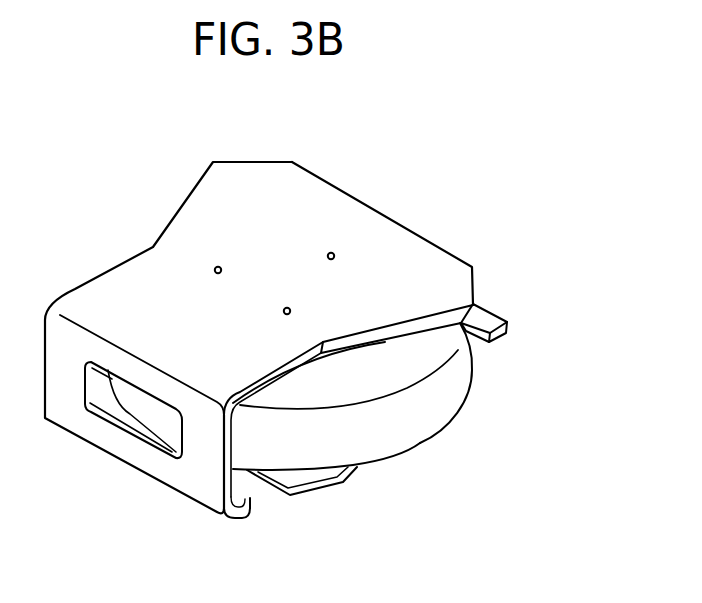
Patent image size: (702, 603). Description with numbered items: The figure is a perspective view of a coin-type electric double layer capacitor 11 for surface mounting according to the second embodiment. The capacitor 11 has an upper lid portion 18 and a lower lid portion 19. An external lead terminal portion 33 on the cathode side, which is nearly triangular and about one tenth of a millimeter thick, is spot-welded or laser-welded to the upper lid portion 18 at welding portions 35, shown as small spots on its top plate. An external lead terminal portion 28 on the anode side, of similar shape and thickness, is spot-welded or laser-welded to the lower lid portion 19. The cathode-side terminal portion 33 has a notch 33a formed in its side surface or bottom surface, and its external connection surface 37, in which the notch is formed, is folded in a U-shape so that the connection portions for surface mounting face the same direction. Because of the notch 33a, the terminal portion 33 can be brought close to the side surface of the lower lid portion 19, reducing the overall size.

The external lead terminal portion on the cathode side 33 is at (360, 217).
The notch 33a is at (102, 412).
The welding portions 35 is at (216, 267).
The external lead terminal portion on the anode side 28 is at (492, 320).
The coin-type electric double layer capacitor 11 is at (470, 372).
The upper lid portion 18 is at (352, 352).
The lower lid portion 19 is at (438, 398).
The external connection surface 37 is at (248, 500).